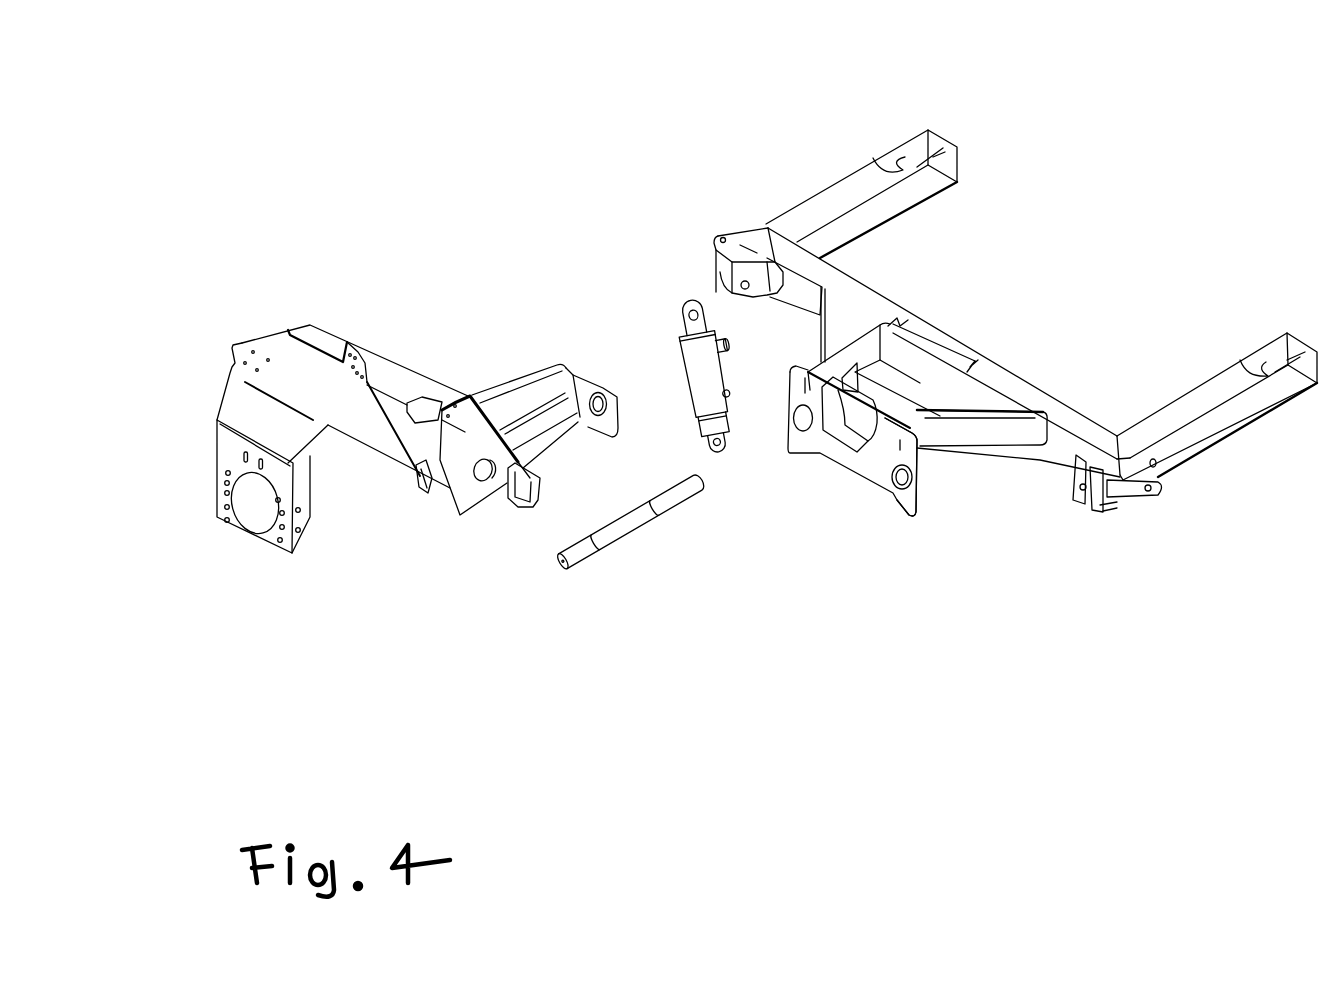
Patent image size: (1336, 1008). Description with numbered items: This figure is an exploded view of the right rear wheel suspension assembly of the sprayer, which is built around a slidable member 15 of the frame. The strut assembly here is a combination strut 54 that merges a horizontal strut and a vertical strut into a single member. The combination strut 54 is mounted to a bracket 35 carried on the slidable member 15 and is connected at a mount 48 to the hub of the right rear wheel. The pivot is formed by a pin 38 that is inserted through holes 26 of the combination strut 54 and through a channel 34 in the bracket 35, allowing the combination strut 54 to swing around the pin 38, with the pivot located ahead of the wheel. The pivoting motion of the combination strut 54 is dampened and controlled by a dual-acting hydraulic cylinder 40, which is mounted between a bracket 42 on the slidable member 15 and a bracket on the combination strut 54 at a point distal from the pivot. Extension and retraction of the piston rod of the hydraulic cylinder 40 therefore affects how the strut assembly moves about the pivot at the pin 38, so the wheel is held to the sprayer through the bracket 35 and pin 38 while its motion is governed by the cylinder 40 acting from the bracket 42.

The slidable member 15 is at (898, 140).
The holes 26 is at (592, 400).
The channel 34 is at (795, 432).
The bracket 35 is at (920, 500).
The pin 38 is at (585, 562).
The dual-acting hydraulic cylinder 40 is at (680, 350).
The bracket 42 is at (769, 262).
The mount 48 is at (253, 507).
The combination strut 54 is at (297, 553).